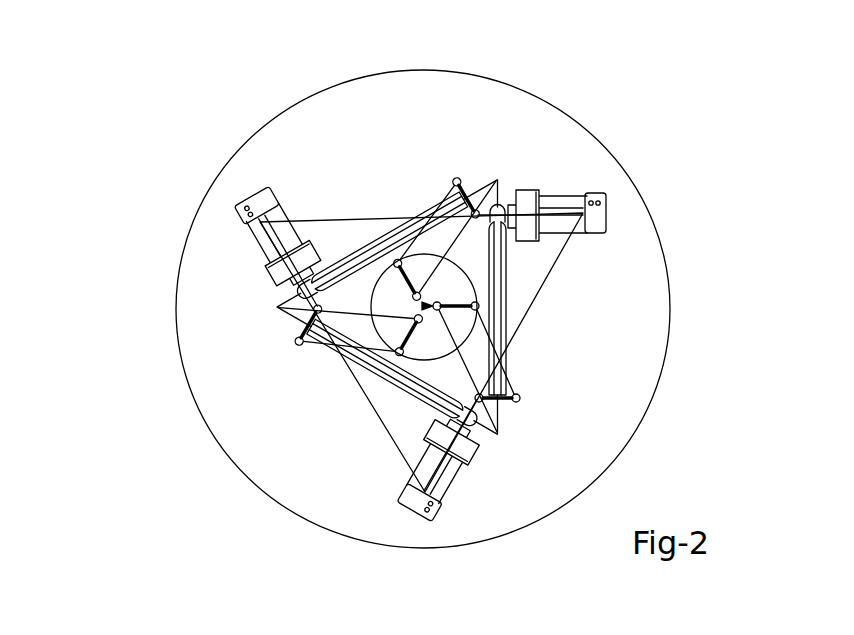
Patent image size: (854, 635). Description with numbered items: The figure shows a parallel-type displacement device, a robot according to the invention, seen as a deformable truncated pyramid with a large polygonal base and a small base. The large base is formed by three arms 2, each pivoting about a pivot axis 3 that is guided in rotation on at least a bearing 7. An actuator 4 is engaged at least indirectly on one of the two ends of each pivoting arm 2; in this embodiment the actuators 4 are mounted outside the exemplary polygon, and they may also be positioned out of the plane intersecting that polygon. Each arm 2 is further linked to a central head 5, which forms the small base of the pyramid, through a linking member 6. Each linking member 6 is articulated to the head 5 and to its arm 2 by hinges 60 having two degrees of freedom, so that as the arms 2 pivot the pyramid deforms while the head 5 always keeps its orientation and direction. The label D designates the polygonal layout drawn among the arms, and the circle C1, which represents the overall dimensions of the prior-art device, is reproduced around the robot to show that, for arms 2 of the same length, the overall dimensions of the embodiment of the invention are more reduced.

The arm 2 is at (390, 237).
The pivot axis 3 is at (397, 237).
The actuator 4 is at (583, 213).
The head 5 is at (590, 305).
The linking member 6 is at (468, 370).
The bearing 7 is at (500, 435).
The hinge 60 is at (417, 297).
The triangular platform D is at (587, 304).
The circle C1 is at (672, 301).